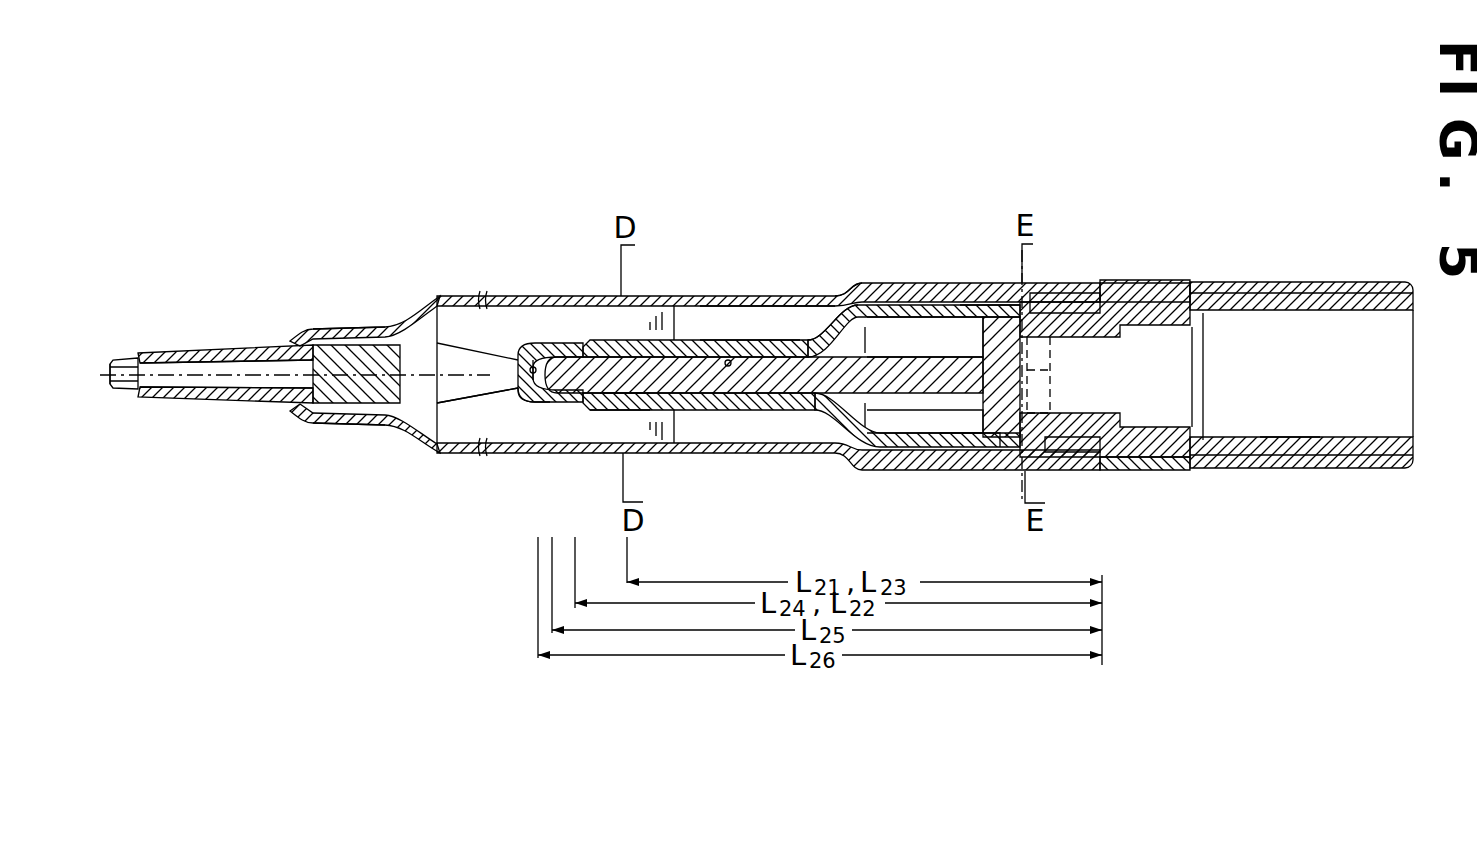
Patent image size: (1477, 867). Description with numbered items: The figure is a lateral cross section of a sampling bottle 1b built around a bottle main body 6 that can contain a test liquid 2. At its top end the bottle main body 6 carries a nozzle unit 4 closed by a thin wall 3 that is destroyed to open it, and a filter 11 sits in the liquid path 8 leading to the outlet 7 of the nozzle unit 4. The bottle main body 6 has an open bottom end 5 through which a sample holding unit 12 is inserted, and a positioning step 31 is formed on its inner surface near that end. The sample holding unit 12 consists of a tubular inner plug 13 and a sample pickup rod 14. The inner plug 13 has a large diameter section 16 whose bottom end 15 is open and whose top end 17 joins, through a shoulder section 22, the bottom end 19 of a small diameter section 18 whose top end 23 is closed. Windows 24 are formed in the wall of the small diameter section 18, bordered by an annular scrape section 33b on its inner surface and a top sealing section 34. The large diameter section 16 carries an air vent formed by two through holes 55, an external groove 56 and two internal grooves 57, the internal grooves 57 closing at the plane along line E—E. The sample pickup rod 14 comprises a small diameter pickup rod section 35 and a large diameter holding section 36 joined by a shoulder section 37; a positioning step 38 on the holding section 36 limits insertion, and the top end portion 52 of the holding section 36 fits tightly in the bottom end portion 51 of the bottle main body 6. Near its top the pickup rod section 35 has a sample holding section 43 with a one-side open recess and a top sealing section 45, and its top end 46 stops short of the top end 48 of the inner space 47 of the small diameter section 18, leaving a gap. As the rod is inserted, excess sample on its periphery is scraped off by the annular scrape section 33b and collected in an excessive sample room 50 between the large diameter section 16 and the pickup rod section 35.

The sampling bottle 1b is at (432, 296).
The test liquid 2 is at (688, 297).
The thin wall 3 is at (112, 390).
The nozzle unit 4 is at (150, 352).
The open bottom end 5 is at (1183, 285).
The bottle main body 6 is at (727, 360).
The outlet 7 is at (113, 360).
The liquid path 8 is at (272, 372).
The filter 11 is at (340, 346).
The sample holding unit 12 is at (900, 433).
The inner plug 13 is at (765, 306).
The sample pickup rod 14 is at (755, 395).
The bottom end 15 is at (1090, 300).
The large diameter section 16 is at (977, 300).
The top end 17 is at (868, 306).
The small diameter section 18 is at (705, 340).
The bottom end 19 is at (800, 297).
The shoulder section 22 is at (830, 296).
The top end 23 is at (415, 402).
The windows 24 is at (592, 411).
The positioning step 31 is at (1068, 294).
The annular scrape section 33b is at (748, 341).
The top sealing section 34 is at (546, 403).
The small diameter pickup rod section 35 is at (714, 396).
The large diameter holding section 36 is at (1288, 453).
The shoulder section 37 is at (950, 447).
The positioning step 38 is at (1104, 283).
The sample holding section 43 is at (620, 403).
The top sealing section 45 is at (558, 343).
The top end 46 is at (546, 343).
The inner space 47 is at (470, 406).
The top end 48 is at (392, 328).
The excessive sample room 50 is at (940, 312).
The bottom end portion 51 is at (1132, 452).
The top end portion 52 is at (1160, 458).
The through holes 55 is at (1038, 335).
The external groove 56 is at (905, 338).
The internal grooves 57 is at (1040, 414).